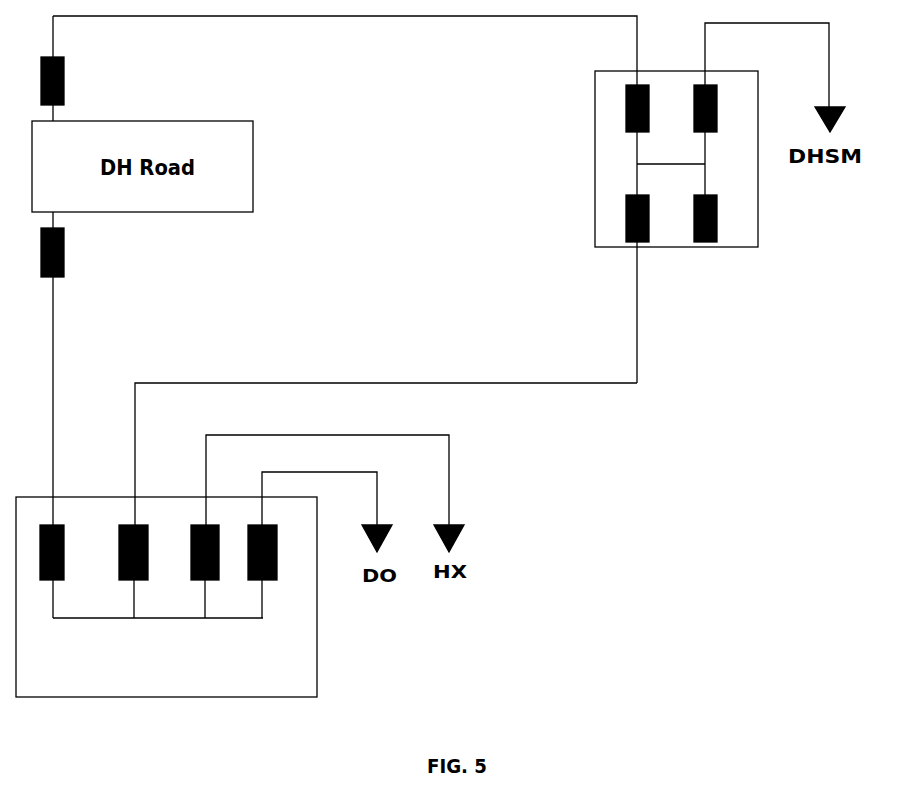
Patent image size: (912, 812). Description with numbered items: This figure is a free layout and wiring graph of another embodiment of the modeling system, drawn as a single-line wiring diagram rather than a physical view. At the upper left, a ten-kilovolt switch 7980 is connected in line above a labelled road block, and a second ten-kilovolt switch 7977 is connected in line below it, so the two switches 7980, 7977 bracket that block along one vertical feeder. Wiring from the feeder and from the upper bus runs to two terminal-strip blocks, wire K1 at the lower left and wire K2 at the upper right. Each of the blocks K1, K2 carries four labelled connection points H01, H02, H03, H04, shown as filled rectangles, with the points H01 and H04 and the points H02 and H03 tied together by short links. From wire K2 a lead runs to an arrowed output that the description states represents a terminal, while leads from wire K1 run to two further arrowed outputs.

The 10KV switch 7980 is at (154, 65).
The 10KV switch 7977 is at (154, 270).
The wire K1 terminal block K1 is at (166, 614).
The wire K2 terminal block K2 is at (676, 180).
The terminal H01 is at (70, 571).
The terminal H02 is at (222, 571).
The terminal H03 is at (280, 571).
The terminal H04 is at (149, 571).